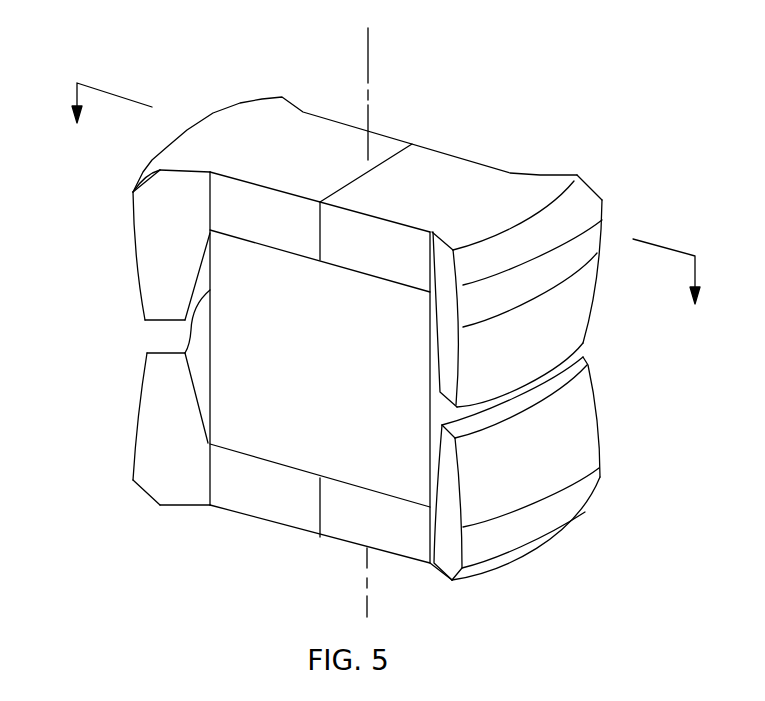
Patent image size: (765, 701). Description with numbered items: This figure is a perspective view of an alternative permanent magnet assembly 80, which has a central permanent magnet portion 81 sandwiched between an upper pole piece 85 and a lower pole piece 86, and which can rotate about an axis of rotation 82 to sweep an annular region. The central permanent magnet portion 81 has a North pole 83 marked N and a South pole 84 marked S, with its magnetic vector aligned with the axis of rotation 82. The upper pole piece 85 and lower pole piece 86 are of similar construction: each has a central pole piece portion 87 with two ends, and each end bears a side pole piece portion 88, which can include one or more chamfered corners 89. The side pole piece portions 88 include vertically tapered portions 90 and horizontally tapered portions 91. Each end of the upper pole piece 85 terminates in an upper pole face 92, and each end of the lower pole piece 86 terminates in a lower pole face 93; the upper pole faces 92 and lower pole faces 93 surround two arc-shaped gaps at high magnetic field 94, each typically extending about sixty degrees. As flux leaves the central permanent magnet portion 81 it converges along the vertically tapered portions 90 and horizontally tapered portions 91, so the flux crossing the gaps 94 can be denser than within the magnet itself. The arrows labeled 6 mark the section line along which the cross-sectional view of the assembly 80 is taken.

The permanent magnet assembly 80 is at (535, 94).
The central permanent magnet portion 81 is at (260, 462).
The axis of rotation 82 is at (370, 42).
The North pole 83 is at (335, 267).
The South pole 84 is at (311, 464).
The upper pole piece 85 is at (302, 145).
The lower pole piece 86 is at (392, 535).
The central pole piece portion 87 is at (310, 517).
The side pole piece portion 88 is at (153, 210).
The chamfered corner 89 is at (153, 168).
The vertically tapered portion 90 is at (160, 254).
The horizontally tapered portion 91 is at (238, 127).
The upper pole face 92 is at (145, 316).
The lower pole face 93 is at (175, 345).
The gap at high magnetic field 94 is at (167, 334).
The section line 6— 6 is at (384, 193).